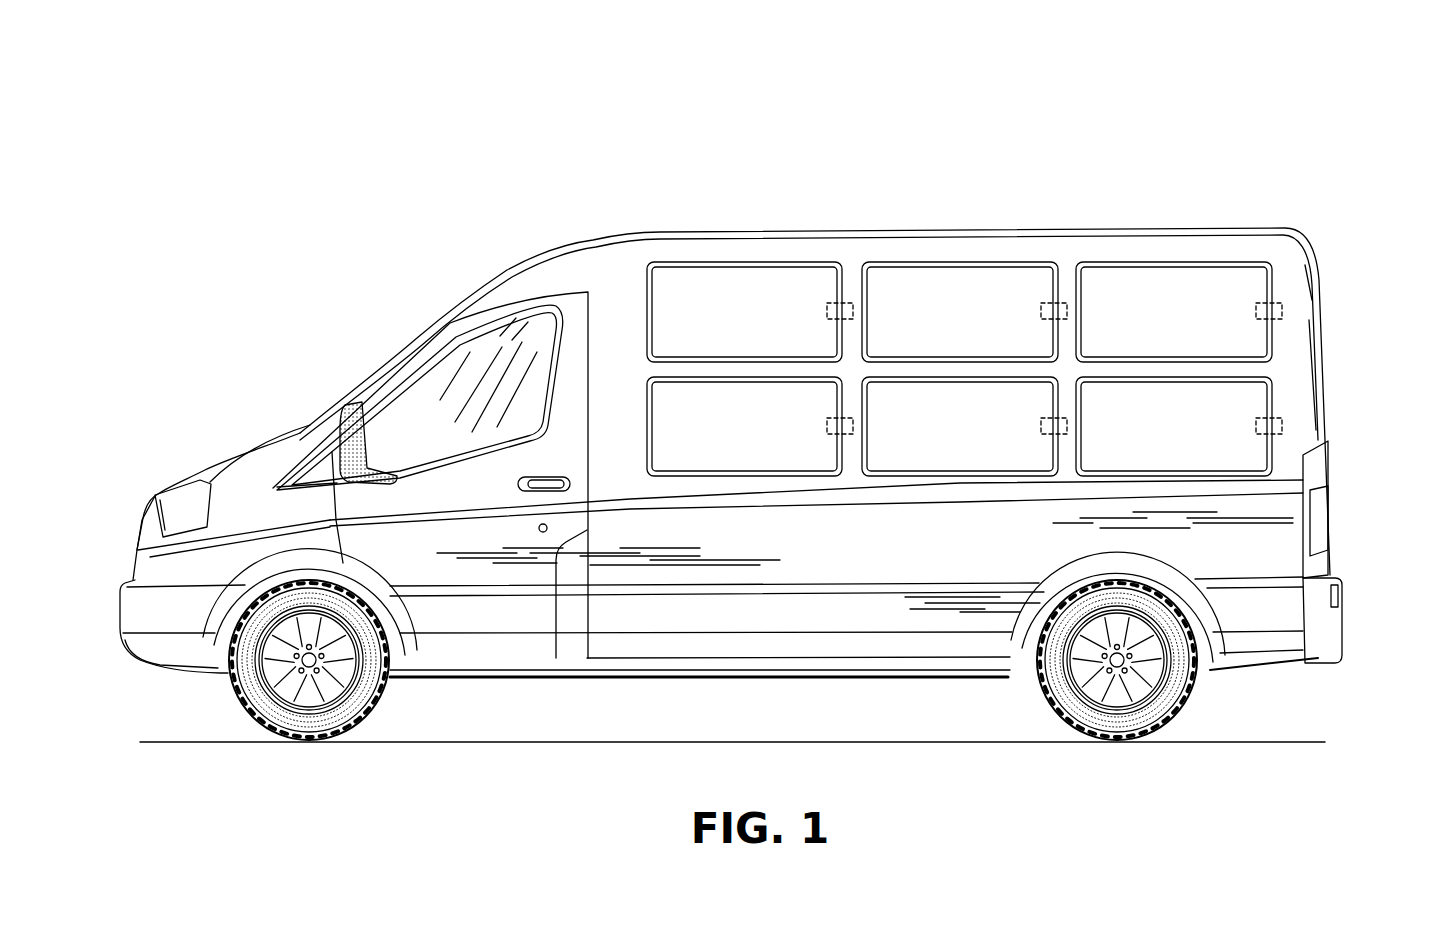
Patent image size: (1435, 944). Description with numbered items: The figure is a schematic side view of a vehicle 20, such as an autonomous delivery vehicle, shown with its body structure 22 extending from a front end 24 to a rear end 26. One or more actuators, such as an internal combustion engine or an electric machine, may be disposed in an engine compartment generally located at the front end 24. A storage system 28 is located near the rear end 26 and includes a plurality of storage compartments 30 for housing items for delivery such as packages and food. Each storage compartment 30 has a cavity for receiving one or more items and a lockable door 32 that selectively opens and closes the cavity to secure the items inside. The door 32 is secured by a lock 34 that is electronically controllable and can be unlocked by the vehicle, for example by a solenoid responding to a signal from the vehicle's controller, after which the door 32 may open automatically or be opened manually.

The vehicle 20 is at (1137, 127).
The body structure 22 is at (1288, 367).
The front end 24 is at (230, 433).
The rear end 26 is at (1312, 223).
The storage system 28 is at (1050, 257).
The storage compartment 30 is at (747, 260).
The lockable door 32 is at (697, 288).
The lock 34 is at (847, 303).